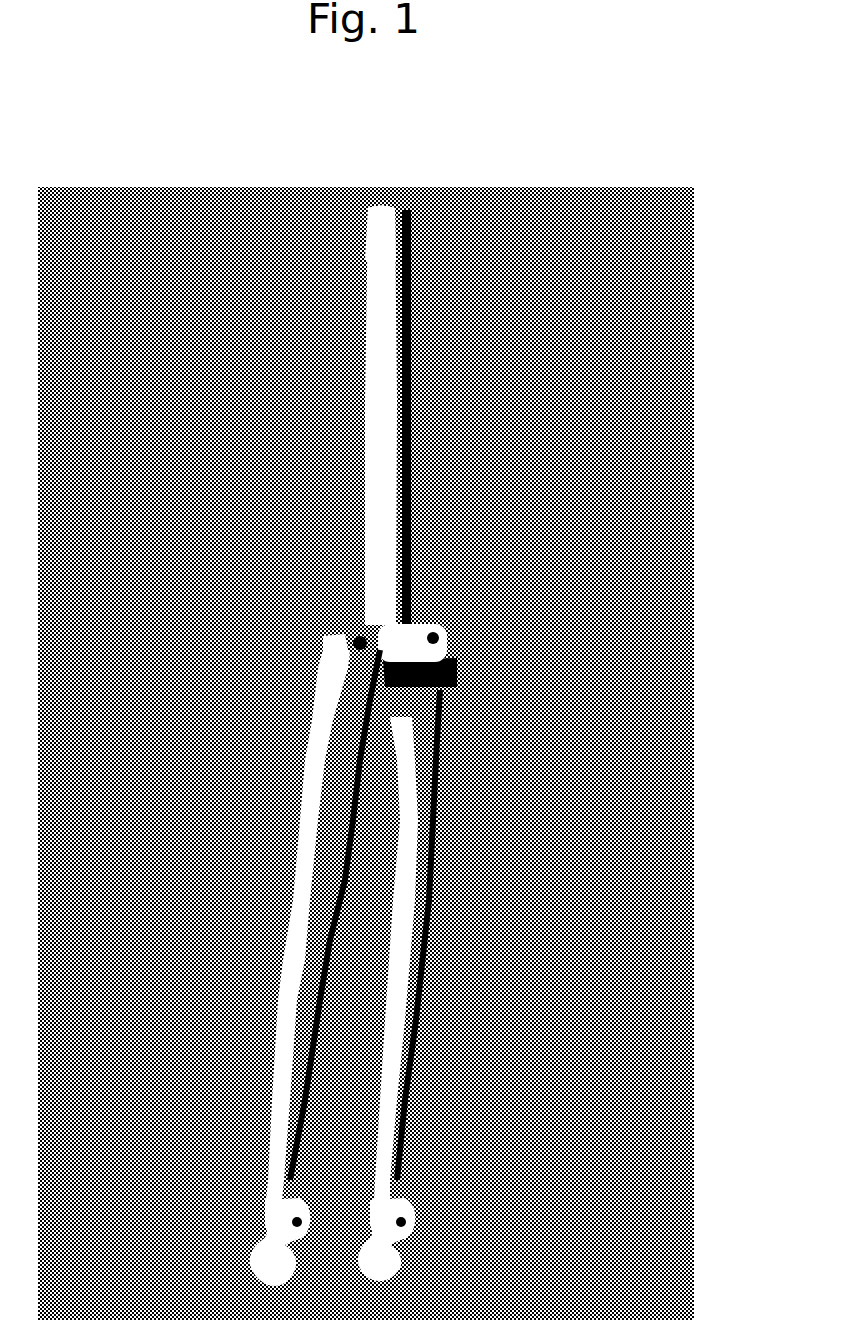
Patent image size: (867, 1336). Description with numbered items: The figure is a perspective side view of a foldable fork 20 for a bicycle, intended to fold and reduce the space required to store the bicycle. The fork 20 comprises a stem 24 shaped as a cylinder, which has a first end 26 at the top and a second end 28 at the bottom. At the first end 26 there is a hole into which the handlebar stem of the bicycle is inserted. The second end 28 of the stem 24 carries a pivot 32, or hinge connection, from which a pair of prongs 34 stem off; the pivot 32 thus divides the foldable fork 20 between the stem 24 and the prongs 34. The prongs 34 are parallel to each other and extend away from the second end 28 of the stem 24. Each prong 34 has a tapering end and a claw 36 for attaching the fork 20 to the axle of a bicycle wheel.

The foldable fork 20 is at (299, 681).
The stem 24 is at (375, 416).
The first end 26 is at (400, 220).
The second end 28 is at (385, 653).
The pivot 32 is at (450, 645).
The prongs 34 is at (410, 857).
The claw 36 is at (265, 1218).